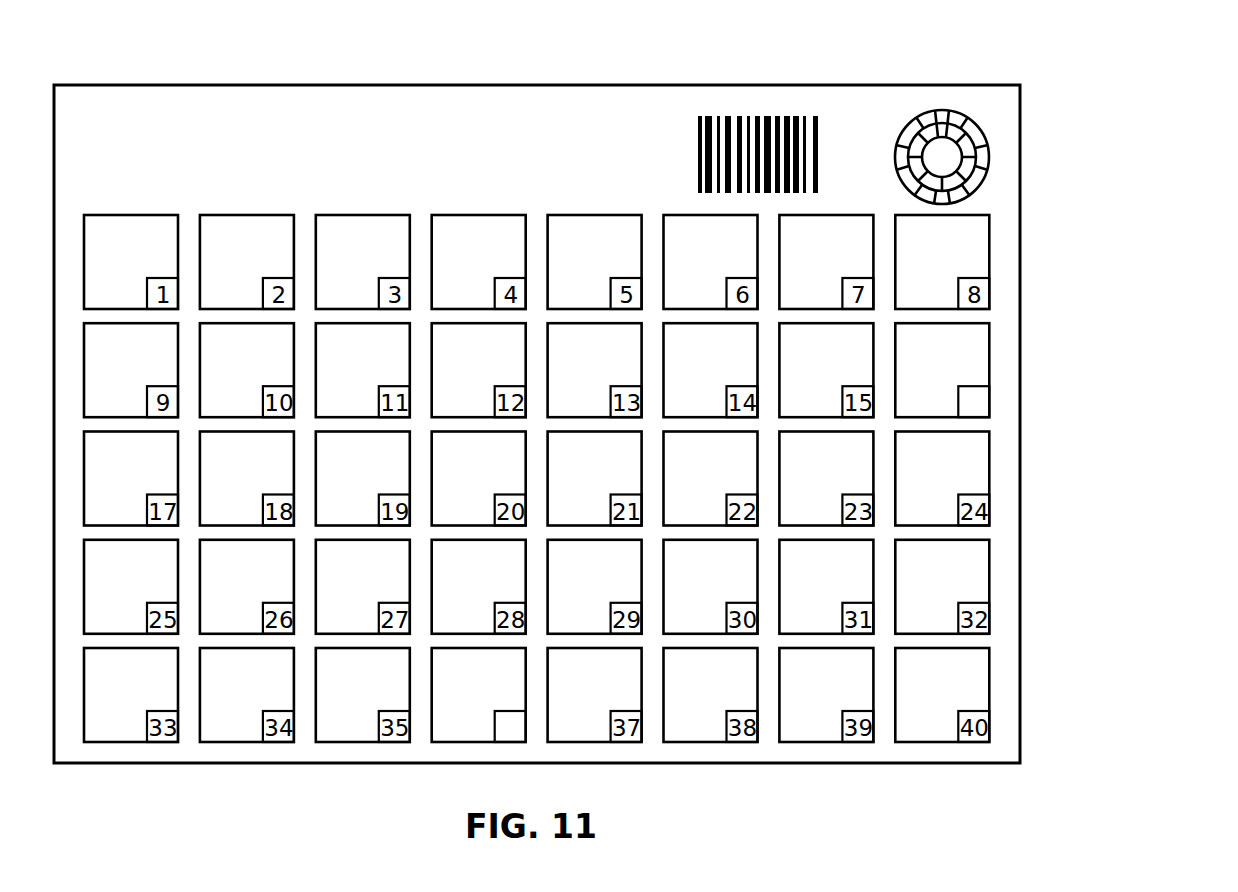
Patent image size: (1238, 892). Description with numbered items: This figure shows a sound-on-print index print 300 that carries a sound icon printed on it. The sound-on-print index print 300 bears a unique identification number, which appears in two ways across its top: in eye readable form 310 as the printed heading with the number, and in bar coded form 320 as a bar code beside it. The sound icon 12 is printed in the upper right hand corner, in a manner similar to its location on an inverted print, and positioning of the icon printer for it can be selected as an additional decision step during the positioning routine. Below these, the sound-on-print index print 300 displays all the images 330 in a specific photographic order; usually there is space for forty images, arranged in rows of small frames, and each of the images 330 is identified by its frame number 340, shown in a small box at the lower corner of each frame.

The sound-on-print index print 300 is at (1070, 386).
The eye readable form 310 is at (300, 115).
The bar coded form 320 is at (697, 156).
The symbol mark 12 is at (986, 152).
The images 330 is at (940, 350).
The frame numbers 340 is at (490, 726).